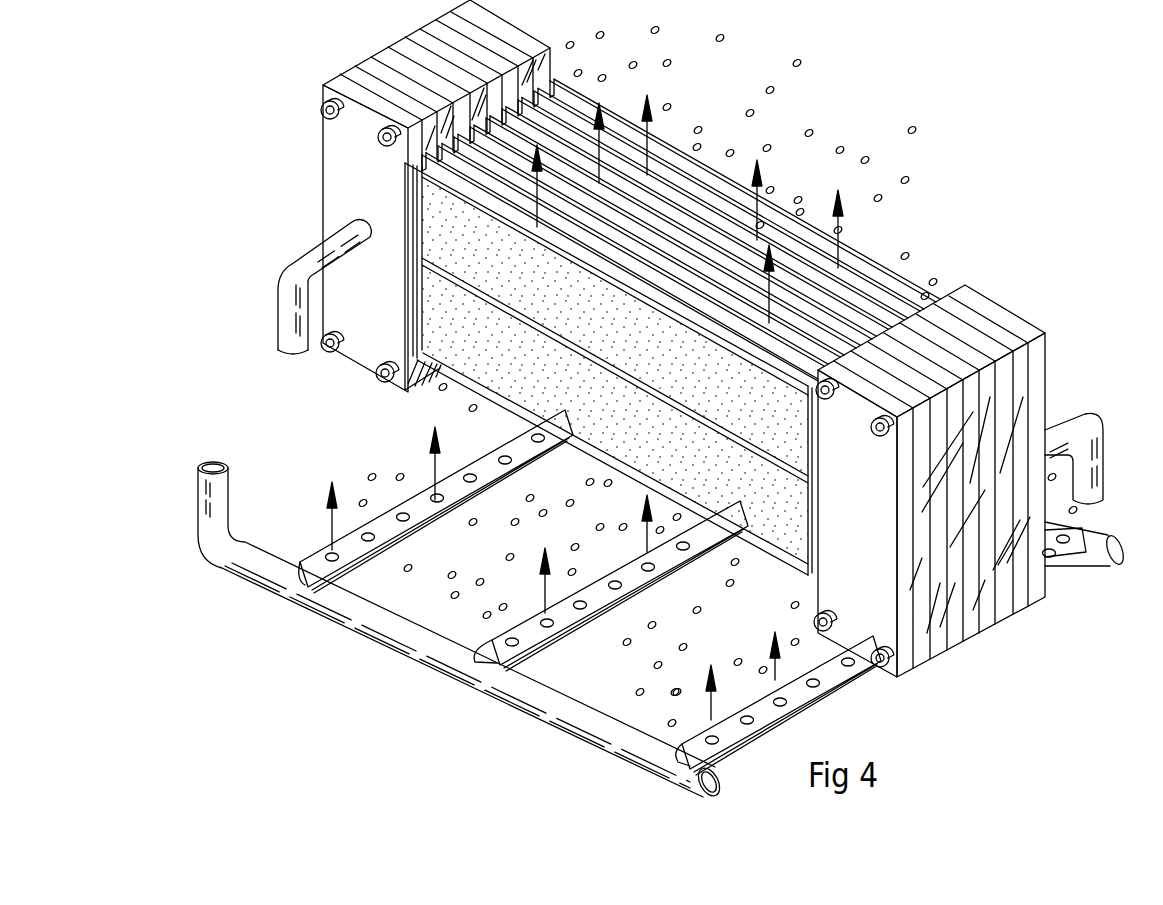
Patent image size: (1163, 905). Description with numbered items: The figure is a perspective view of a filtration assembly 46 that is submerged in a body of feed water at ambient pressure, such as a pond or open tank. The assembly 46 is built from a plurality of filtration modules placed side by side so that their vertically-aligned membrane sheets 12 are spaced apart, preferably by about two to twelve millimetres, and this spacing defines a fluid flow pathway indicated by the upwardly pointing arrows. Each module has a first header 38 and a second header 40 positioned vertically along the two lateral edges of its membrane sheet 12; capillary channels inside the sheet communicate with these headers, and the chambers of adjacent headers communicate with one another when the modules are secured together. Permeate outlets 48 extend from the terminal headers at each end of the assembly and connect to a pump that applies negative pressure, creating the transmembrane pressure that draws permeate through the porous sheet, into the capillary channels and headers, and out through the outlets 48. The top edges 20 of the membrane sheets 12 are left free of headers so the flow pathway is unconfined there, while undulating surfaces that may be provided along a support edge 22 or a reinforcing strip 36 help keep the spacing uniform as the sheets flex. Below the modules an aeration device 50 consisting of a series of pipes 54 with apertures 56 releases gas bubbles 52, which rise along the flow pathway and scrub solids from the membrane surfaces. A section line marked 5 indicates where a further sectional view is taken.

The section line 5- 5 is at (255, 158).
The membrane sheet 12 is at (480, 368).
The top edge 20 is at (862, 288).
The support edge 22 is at (520, 410).
The reinforcing strip 36 is at (580, 357).
The first header 38 is at (346, 132).
The second header 40 is at (878, 617).
The filtration assembly 46 is at (1003, 147).
The permeate outlet 48 is at (280, 315).
The aeration device 50 is at (202, 508).
The gas bubbles 52 is at (806, 62).
The pipes 54 is at (355, 565).
The apertures 56 is at (505, 626).